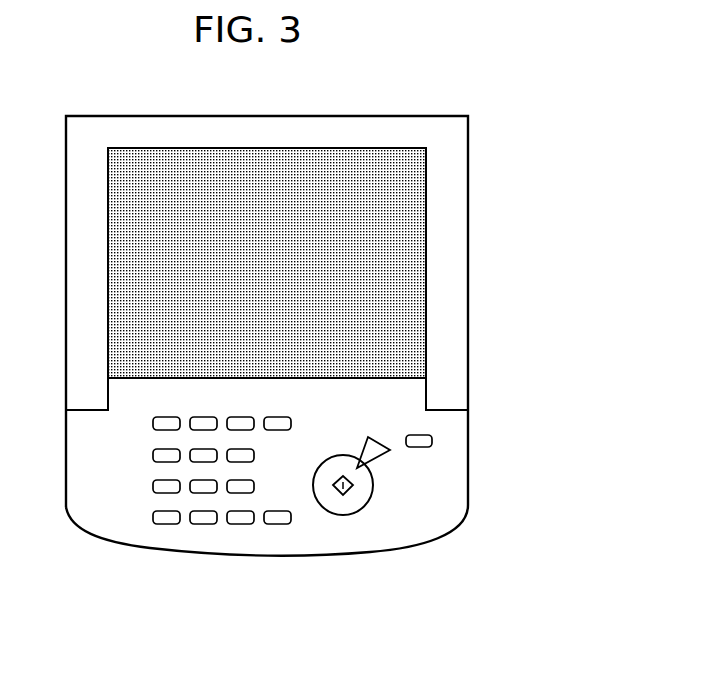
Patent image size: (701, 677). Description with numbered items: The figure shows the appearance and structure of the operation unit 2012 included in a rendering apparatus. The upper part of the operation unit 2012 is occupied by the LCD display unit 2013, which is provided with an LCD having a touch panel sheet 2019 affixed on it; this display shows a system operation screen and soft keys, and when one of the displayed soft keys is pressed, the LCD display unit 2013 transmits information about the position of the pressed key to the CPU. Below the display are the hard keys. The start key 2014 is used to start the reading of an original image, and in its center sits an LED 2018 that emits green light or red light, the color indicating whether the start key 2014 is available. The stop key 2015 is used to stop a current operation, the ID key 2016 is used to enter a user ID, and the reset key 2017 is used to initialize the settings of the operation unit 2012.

The operation unit 2012 is at (284, 116).
The LCD display unit 2013 is at (427, 197).
The touch panel sheet 2019 is at (412, 238).
The start key 2014 is at (373, 491).
The stop key 2015 is at (368, 437).
The ID key 2016 is at (276, 524).
The reset key 2017 is at (432, 441).
The LED 2018 is at (343, 495).